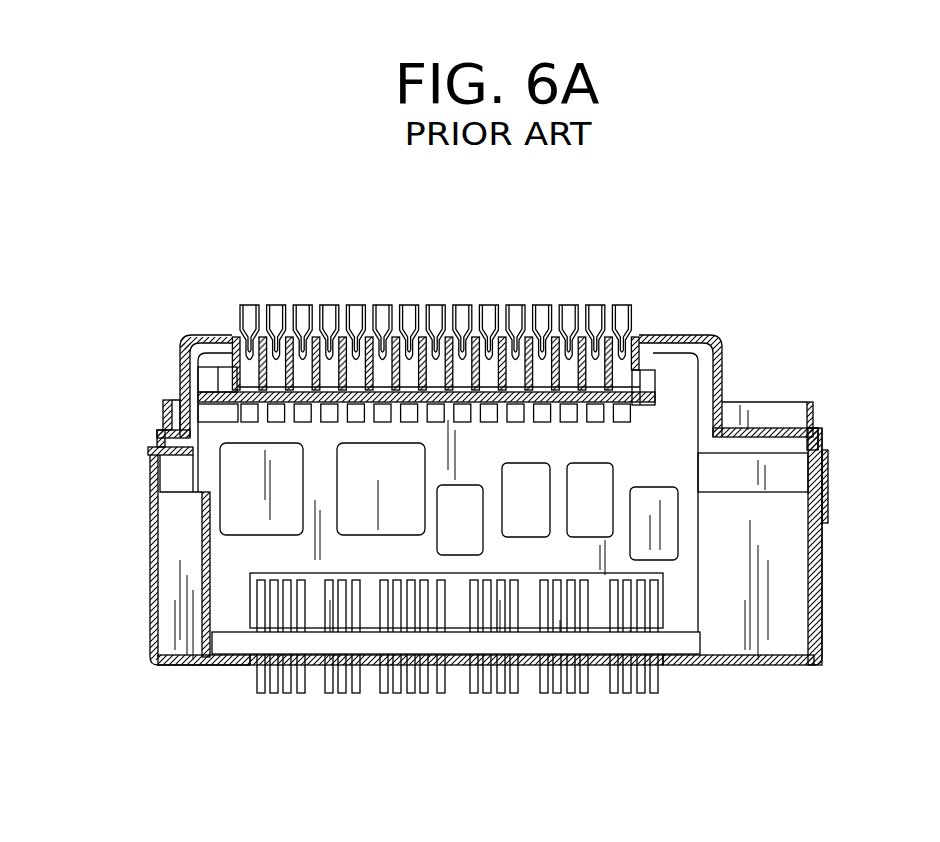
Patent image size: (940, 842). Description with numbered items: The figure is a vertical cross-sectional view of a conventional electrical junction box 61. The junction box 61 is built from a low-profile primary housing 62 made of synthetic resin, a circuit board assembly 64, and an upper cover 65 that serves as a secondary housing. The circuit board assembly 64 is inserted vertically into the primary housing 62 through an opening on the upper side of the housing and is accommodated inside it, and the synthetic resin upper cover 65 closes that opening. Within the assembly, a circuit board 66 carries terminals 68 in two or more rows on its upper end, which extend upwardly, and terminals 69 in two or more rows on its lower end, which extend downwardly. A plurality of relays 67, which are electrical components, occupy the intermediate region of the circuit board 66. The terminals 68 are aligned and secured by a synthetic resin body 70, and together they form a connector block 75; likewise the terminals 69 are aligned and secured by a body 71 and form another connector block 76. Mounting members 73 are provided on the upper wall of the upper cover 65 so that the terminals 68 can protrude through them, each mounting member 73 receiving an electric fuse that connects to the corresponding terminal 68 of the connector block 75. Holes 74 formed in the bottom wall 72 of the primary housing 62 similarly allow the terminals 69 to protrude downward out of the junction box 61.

The electrical junction box 61 is at (698, 217).
The primary housing 62 is at (823, 579).
The circuit board assembly 64 is at (702, 369).
The upper cover 65 is at (684, 337).
The circuit board 66 is at (670, 412).
The relays 67 is at (457, 515).
The terminals 68 is at (622, 374).
The terminals 69 is at (662, 690).
The body 70 is at (637, 396).
The body 71 is at (688, 641).
The bottom wall 72 is at (778, 668).
The mounting members 73 is at (540, 305).
The holes 74 is at (660, 668).
The connector block 75 is at (235, 329).
The connector block 76 is at (232, 672).